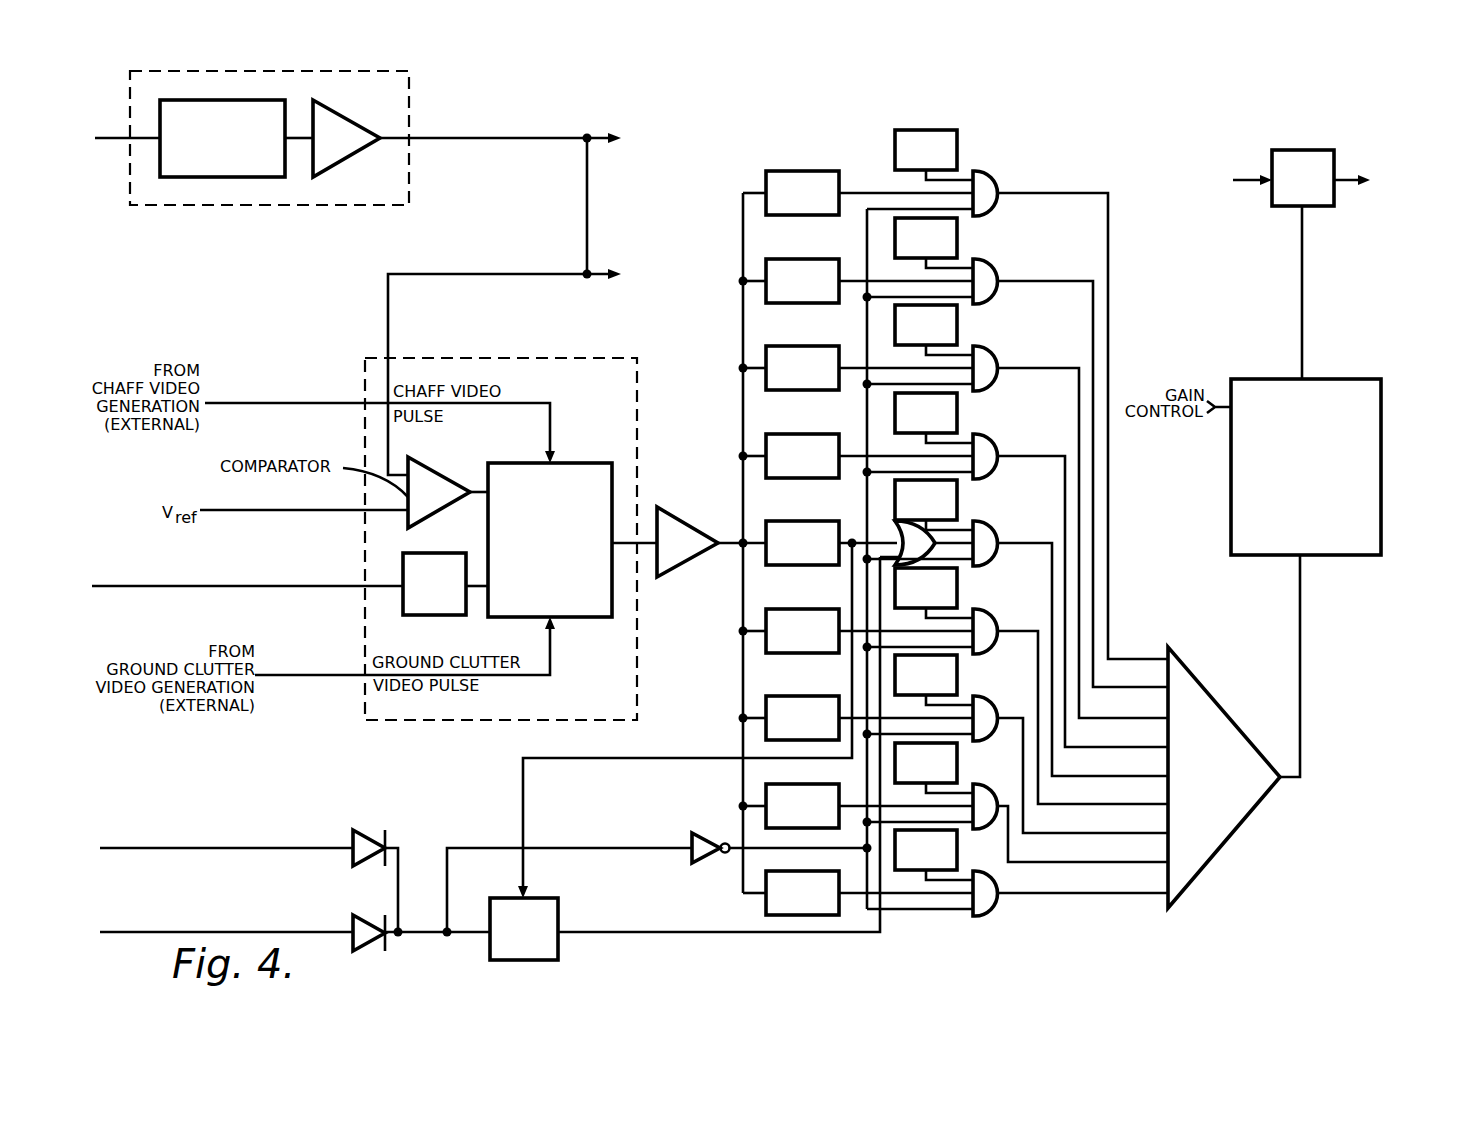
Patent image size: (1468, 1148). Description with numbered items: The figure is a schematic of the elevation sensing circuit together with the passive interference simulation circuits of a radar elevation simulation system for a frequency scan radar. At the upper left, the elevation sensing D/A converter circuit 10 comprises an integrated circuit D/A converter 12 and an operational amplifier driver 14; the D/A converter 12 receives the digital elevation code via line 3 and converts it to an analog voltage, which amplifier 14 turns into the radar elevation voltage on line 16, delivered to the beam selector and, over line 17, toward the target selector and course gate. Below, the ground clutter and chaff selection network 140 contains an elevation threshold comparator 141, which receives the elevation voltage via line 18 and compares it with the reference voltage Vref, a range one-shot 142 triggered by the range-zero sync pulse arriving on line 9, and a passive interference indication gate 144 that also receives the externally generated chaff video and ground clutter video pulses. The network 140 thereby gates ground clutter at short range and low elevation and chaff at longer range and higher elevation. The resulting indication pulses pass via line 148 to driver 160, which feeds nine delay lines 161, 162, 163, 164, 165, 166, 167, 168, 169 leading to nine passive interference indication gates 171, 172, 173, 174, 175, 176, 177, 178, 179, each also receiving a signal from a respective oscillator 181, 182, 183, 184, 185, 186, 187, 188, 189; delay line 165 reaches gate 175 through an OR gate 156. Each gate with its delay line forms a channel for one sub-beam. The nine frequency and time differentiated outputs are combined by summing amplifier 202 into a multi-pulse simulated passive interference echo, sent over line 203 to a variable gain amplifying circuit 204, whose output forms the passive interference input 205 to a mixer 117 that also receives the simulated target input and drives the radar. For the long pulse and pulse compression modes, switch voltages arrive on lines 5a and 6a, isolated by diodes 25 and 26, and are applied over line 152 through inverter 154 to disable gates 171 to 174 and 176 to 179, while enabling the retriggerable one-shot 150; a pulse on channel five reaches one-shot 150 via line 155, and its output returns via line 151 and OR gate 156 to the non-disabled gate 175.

The line 3 is at (116, 139).
The elevation sensing D/A converter circuit 10 is at (410, 100).
The D/A converter 12 is at (230, 99).
The operational amplifier driver 14 is at (337, 112).
The line 16 is at (555, 140).
The output to target selector and course gate 17 is at (593, 278).
The line 18 is at (537, 272).
The ground clutter and chaff selection network 140 is at (527, 357).
The elevation threshold comparator 141 is at (447, 470).
The range one-shot 142 is at (443, 618).
The passive interference indication gate 144 is at (530, 463).
The line 148 is at (640, 543).
The driver 160 is at (690, 515).
The delay line 161 is at (766, 905).
The delay line 162 is at (808, 783).
The delay line 163 is at (808, 695).
The delay line 164 is at (808, 608).
The delay line 165 is at (808, 520).
The delay line 166 is at (808, 433).
The delay line 167 is at (808, 345).
The delay line 168 is at (808, 258).
The delay line 169 is at (808, 170).
The passive interference indication gate 171 is at (995, 906).
The passive interference indication gate 172 is at (995, 791).
The passive interference indication gate 173 is at (995, 703).
The passive interference indication gate 174 is at (995, 616).
The passive interference indication gate 175 is at (995, 528).
The passive interference indication gate 176 is at (995, 441).
The passive interference indication gate 177 is at (995, 353).
The passive interference indication gate 178 is at (995, 266).
The passive interference indication gate 179 is at (995, 178).
The oscillator 181 is at (957, 838).
The oscillator 182 is at (957, 751).
The oscillator 183 is at (957, 663).
The oscillator 184 is at (957, 576).
The oscillator 185 is at (957, 488).
The oscillator 186 is at (957, 401).
The oscillator 187 is at (957, 313).
The oscillator 188 is at (957, 226).
The oscillator 189 is at (957, 138).
The OR gate 156 is at (897, 533).
The line 155 is at (523, 783).
The retriggerable one-shot 150 is at (562, 910).
The line 151 is at (682, 928).
The line 152 is at (485, 847).
The inverter gate 154 is at (700, 833).
The diode 25 is at (368, 830).
The diode 26 is at (362, 913).
The line 5a is at (213, 842).
The line 6a is at (213, 927).
The range zero sync pulse input 9 is at (240, 581).
The summing amplifier 202 is at (1198, 675).
The line 203 is at (1302, 637).
The variable gain amplifying circuit 204 is at (1325, 377).
The passive interference input line 205 is at (1304, 251).
The mixer 117 is at (1313, 150).